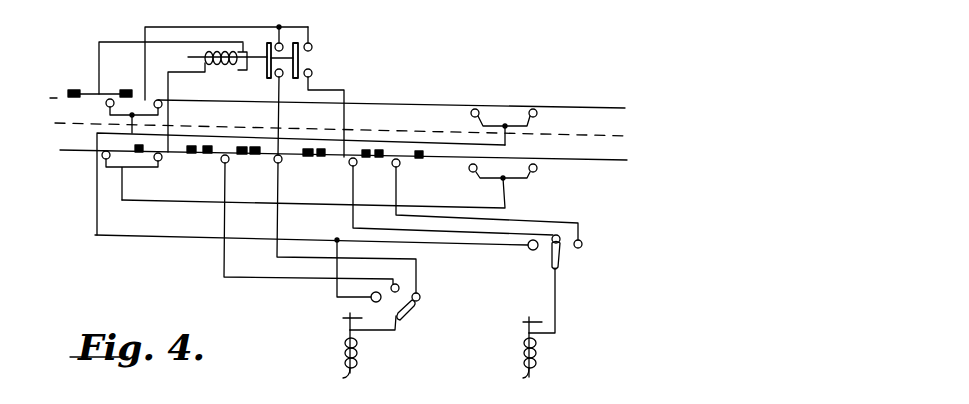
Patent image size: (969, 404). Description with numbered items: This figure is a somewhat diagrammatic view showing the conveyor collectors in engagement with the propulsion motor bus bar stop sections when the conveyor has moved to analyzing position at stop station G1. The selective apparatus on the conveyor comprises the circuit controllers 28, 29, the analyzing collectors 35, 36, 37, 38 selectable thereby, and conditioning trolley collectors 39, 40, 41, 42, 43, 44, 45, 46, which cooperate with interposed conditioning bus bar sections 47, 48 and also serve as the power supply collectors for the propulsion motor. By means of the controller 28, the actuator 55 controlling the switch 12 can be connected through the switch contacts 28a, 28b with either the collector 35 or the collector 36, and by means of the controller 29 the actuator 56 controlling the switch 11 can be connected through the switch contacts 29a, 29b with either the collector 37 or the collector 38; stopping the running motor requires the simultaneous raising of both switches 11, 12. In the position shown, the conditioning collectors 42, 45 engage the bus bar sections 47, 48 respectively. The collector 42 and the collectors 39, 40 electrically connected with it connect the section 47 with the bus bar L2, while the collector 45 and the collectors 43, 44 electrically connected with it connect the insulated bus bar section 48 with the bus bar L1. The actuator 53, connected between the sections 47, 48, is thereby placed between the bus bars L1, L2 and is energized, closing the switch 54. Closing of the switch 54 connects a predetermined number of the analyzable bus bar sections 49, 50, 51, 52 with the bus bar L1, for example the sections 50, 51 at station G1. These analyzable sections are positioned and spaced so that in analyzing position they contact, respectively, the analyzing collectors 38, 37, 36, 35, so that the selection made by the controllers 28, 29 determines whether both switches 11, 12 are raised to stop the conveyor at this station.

The bus bar L1 is at (596, 108).
The bus bar L2 is at (592, 163).
The stop station G1 is at (322, 90).
The actuator 53 is at (221, 54).
The switch 54 is at (284, 57).
The bus bar section 48 is at (89, 92).
The conditioning trolley collector 46 is at (106, 104).
The conditioning trolley collector 45 is at (153, 102).
The bus bar section 47 is at (178, 150).
The analyzable bus bar section 49 is at (233, 150).
The analyzable bus bar section 50 is at (284, 154).
The analyzable bus bar section 51 is at (347, 156).
The analyzable bus bar section 52 is at (413, 157).
The conditioning trolley collector 42 is at (103, 158).
The conditioning trolley collector 41 is at (159, 161).
The analyzing collector 38 is at (222, 163).
The analyzing collector 37 is at (281, 163).
The analyzing collector 36 is at (355, 166).
The analyzing collector 35 is at (400, 167).
The conditioning trolley collector 44 is at (475, 109).
The conditioning trolley collector 43 is at (534, 109).
The conditioning trolley collector 40 is at (474, 172).
The conditioning trolley collector 39 is at (536, 172).
The circuit controller 28 is at (559, 267).
The switch contact 28a is at (560, 235).
The switch contact 28b is at (582, 245).
The circuit controller 29 is at (405, 310).
The switch contact 29a is at (399, 288).
The switch contact 29b is at (419, 300).
The switch 11 is at (350, 317).
The switch 12 is at (527, 321).
The actuator 56 is at (343, 351).
The actuator 55 is at (523, 354).